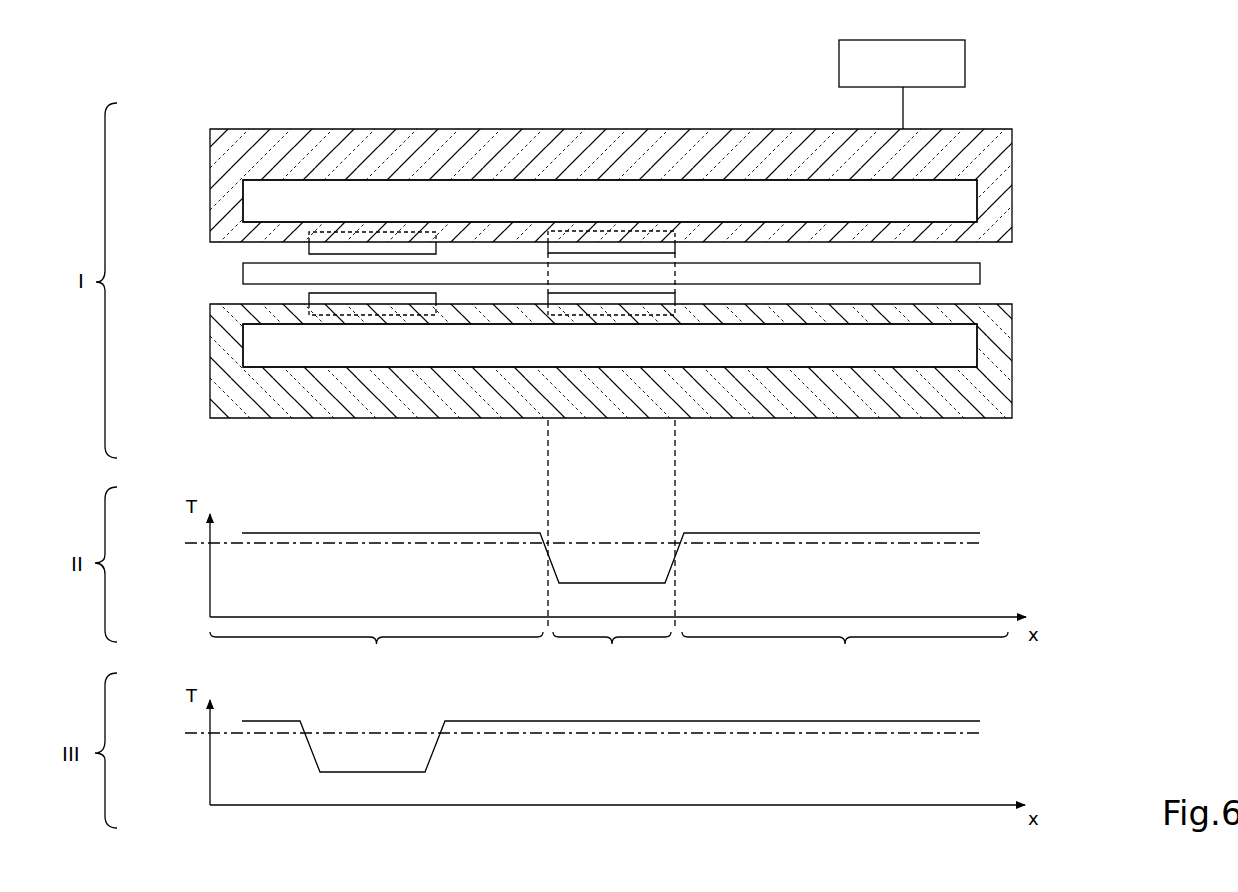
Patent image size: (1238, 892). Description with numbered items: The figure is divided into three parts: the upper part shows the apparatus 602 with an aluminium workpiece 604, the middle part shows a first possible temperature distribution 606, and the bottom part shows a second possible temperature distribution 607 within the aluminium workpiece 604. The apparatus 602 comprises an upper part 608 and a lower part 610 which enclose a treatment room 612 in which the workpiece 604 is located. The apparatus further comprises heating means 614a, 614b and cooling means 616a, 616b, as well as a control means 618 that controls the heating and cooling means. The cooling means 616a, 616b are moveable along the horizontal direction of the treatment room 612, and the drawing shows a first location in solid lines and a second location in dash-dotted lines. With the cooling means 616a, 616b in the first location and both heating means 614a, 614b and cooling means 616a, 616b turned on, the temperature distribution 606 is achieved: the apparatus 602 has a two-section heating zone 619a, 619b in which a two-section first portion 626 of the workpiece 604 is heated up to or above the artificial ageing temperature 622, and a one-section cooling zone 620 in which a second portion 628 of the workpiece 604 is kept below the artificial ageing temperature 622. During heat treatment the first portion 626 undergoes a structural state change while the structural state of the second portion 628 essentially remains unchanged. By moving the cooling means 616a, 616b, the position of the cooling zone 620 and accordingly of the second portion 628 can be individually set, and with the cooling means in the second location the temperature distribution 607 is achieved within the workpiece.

The apparatus 602 is at (1040, 100).
The aluminium workpiece 604 is at (258, 273).
The first possible temperature distribution 606 is at (1044, 541).
The second possible temperature distribution 607 is at (1044, 728).
The upper part 608 is at (233, 143).
The lower part 610 is at (233, 405).
The treatment room 612 is at (208, 267).
The heating means 614a is at (528, 200).
The heating means 614b is at (530, 345).
The cooling means 616a is at (352, 238).
The cooling means 616b is at (352, 318).
The control means 618 is at (922, 75).
The heating zone 619a is at (376, 655).
The heating zone 619b is at (845, 655).
The cooling zone 620 is at (612, 655).
The artificial ageing temperature 622 is at (200, 545).
The first portion 626 is at (458, 274).
The second portion 628 is at (644, 275).